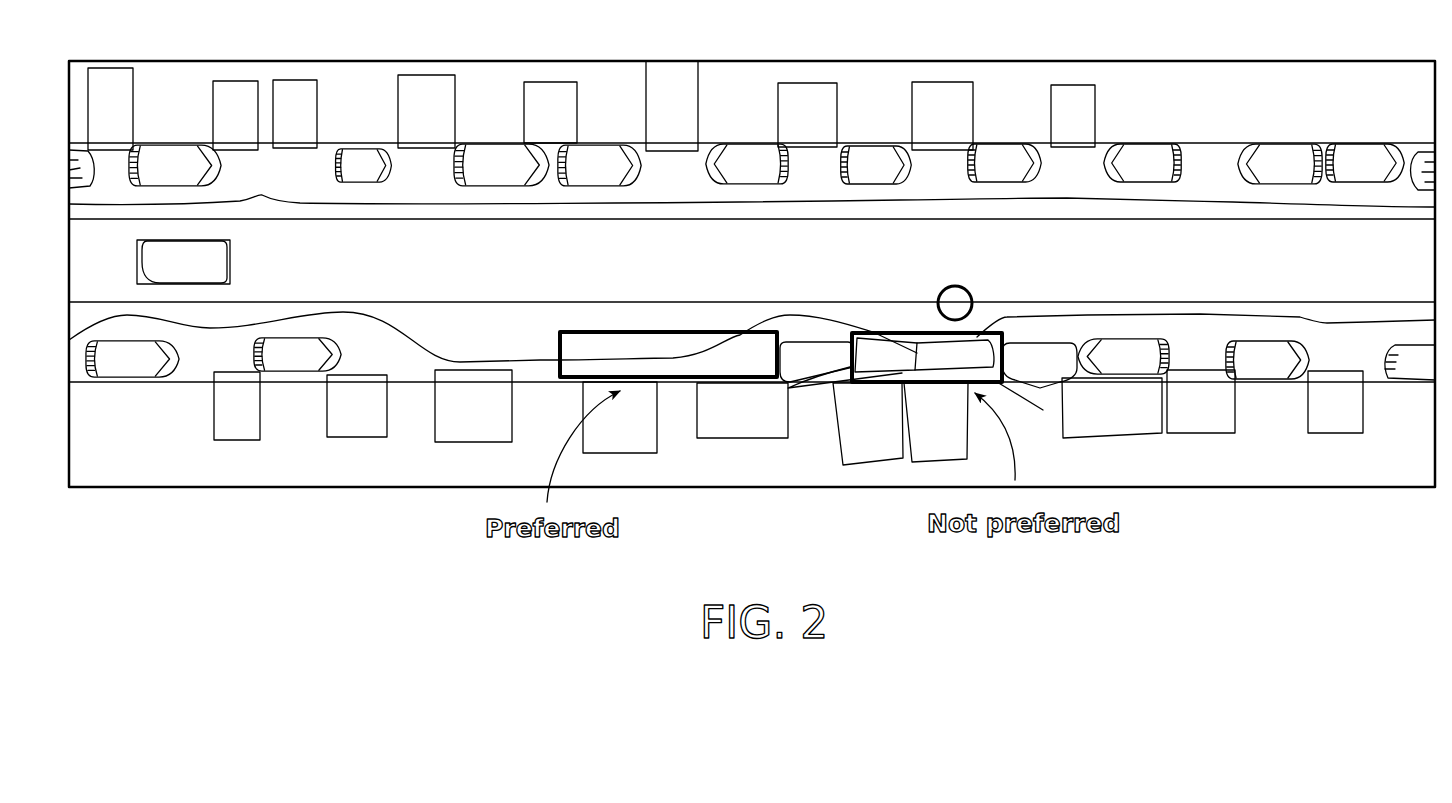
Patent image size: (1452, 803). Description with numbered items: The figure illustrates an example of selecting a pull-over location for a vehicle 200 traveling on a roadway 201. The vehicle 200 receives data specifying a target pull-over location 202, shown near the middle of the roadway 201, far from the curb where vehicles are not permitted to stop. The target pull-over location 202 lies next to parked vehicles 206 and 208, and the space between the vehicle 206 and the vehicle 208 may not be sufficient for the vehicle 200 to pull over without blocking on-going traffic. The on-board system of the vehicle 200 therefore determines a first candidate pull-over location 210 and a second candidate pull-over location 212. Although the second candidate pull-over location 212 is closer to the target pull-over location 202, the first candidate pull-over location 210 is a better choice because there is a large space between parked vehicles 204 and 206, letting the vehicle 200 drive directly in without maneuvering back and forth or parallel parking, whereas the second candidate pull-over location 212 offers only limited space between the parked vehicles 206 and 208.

The vehicle 200 is at (210, 262).
The roadway 201 is at (1245, 268).
The target pull-over location 202 is at (974, 287).
The parked vehicle 204 is at (315, 330).
The parked vehicle 206 is at (822, 336).
The parked vehicle 208 is at (1060, 337).
The first candidate pull-over location 210 is at (627, 326).
The second candidate pull-over location 212 is at (1000, 380).